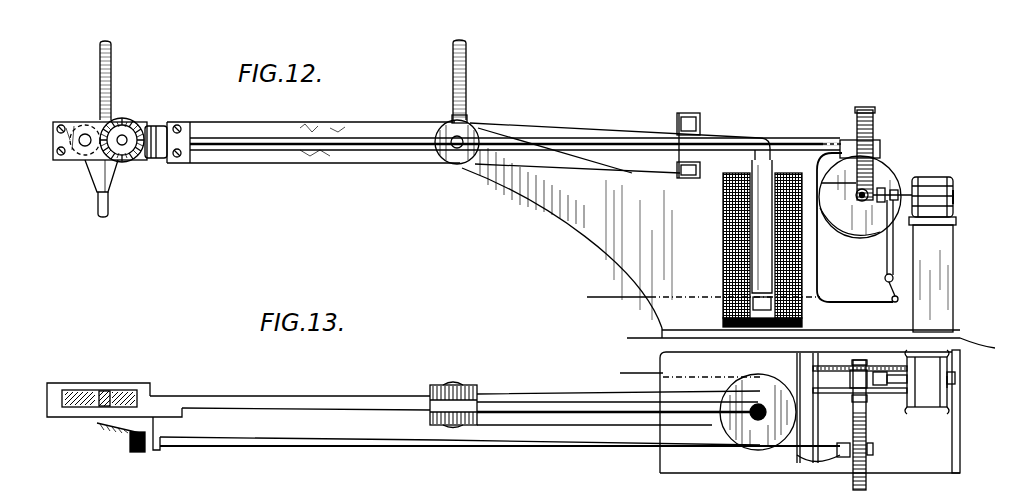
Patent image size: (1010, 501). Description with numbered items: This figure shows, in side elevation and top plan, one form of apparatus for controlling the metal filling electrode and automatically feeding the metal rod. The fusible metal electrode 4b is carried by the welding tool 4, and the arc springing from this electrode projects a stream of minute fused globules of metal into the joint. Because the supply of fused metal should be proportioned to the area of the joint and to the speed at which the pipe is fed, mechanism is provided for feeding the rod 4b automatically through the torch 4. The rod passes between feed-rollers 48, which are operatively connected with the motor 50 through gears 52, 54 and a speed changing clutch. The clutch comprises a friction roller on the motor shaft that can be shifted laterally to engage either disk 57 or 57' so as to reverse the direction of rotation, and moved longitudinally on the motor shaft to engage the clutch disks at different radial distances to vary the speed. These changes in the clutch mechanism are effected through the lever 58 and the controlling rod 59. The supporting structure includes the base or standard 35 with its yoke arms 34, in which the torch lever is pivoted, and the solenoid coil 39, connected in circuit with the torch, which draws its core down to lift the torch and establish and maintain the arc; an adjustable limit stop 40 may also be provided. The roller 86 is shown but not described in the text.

In FIG. 12, the welding tool 4 is at (98, 171).
In FIG. 12, the metal filling electrode 4b is at (98, 201).
In FIG. 13, the metal filling electrode 4b is at (102, 398).
In FIG. 12, the feed-rollers 48 is at (82, 128).
In FIG. 13, the feed-rollers 48 is at (112, 402).
In FIG. 12, the gear 52 is at (148, 160).
In FIG. 13, the gear 52 is at (131, 435).
In FIG. 13, the yoke arms 34 is at (553, 383).
In FIG. 12, the roller 86 is at (468, 118).
In FIG. 13, the roller 86 is at (453, 405).
In FIG. 12, the adjustable limit stop 40 is at (680, 127).
In FIG. 12, the solenoid coil 39 is at (723, 264).
In FIG. 13, the solenoid coil 39 is at (750, 380).
In FIG. 12, the base or standard 35 is at (641, 266).
In FIG. 13, the base or standard 35 is at (670, 362).
In FIG. 12, the controlling rod 59 is at (617, 297).
In FIG. 13, the controlling rod 59 is at (963, 448).
In FIG. 12, the gear 54 is at (857, 120).
In FIG. 13, the gear 54 is at (866, 486).
In FIG. 12, the motor 50 is at (952, 208).
In FIG. 13, the motor 50 is at (935, 368).
In FIG. 12, the lever 58 is at (895, 258).
In FIG. 13, the lever 58 is at (948, 390).
In FIG. 13, the clutch disk 57 is at (902, 366).
In FIG. 13, the clutch disk 57' is at (896, 422).